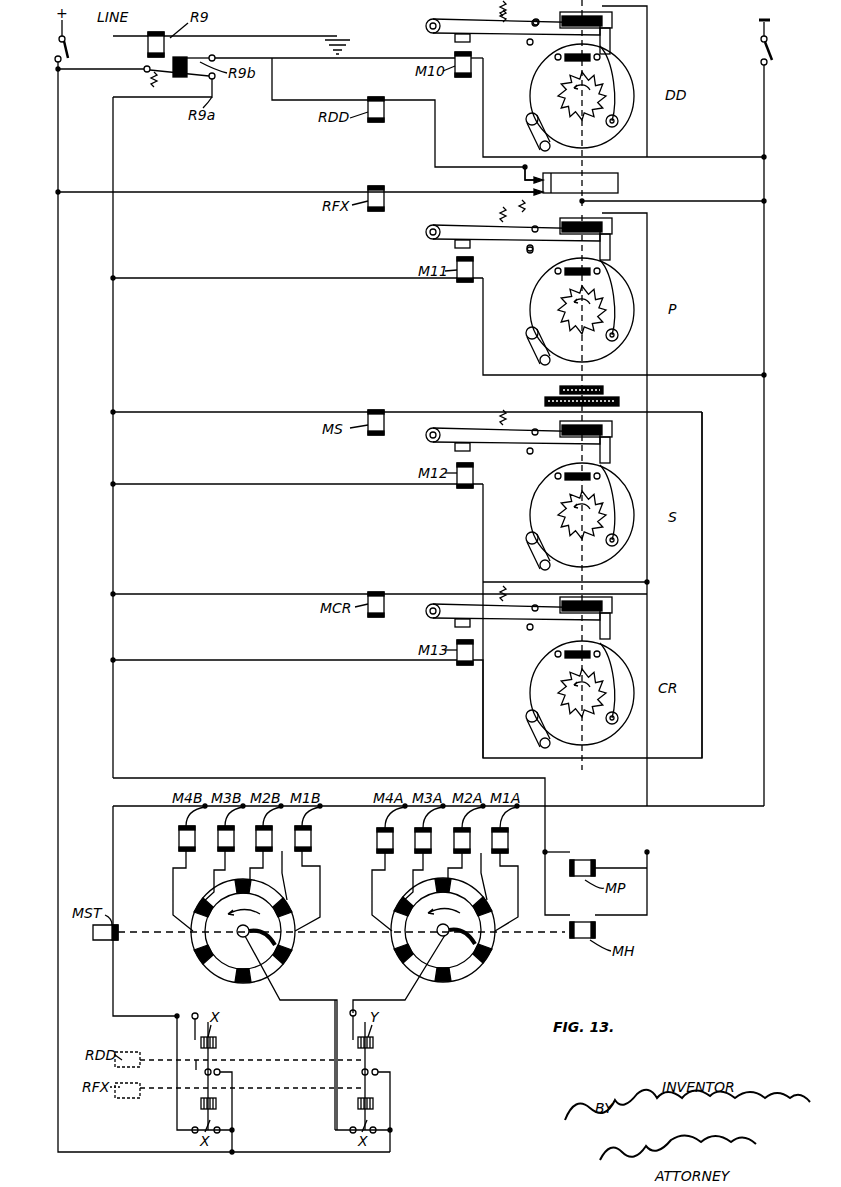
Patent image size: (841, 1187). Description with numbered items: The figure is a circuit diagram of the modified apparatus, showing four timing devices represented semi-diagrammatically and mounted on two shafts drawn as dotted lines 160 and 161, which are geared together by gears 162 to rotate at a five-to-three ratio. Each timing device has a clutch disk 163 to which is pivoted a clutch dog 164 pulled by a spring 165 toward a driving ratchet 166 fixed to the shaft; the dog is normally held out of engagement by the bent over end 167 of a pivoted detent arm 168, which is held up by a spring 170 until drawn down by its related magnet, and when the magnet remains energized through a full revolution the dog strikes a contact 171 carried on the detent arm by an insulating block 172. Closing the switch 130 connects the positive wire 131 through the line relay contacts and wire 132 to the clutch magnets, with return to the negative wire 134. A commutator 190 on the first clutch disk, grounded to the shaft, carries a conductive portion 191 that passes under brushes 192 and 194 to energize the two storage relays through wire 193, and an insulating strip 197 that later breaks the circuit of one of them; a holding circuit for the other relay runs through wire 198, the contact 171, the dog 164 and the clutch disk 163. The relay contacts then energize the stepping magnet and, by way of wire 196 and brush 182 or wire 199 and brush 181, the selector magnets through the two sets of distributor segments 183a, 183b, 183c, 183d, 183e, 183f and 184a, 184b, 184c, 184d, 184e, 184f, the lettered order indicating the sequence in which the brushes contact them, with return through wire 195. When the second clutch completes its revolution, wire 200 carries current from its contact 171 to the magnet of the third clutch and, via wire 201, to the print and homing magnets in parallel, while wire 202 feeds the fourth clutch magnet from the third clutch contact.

The switch 130 is at (67, 46).
The positive wire 131 is at (58, 160).
The wire 132 is at (113, 160).
The negative wire 134 is at (766, 147).
The shaft 160 is at (582, 378).
The shaft 161 is at (582, 578).
The gears 162 is at (545, 401).
The clutch disk 163 is at (618, 146).
The clutch dog 164 is at (632, 77).
The spring 165 is at (566, 266).
The driving ratchet 166 is at (558, 92).
The bent over end 167 is at (611, 45).
The detent arm 168 is at (502, 33).
The spring 170 is at (500, 233).
The contact 171 is at (612, 22).
The insulating block 172 is at (556, 18).
The brush 181 is at (470, 964).
The brush 182 is at (272, 962).
The commutator segment 183a is at (493, 947).
The commutator segment 183b is at (474, 900).
The commutator segment 183c is at (405, 900).
The commutator segment 183d is at (398, 955).
The commutator segment 183e is at (432, 985).
The commutator segment 183f is at (462, 975).
The commutator segment 184a is at (288, 947).
The commutator segment 184b is at (279, 900).
The commutator segment 184c is at (205, 900).
The commutator segment 184d is at (196, 950).
The commutator segment 184e is at (212, 968).
The commutator segment 184f is at (258, 982).
The commutator 190 is at (628, 180).
The conductive portion 191 is at (615, 187).
The brush 192 is at (530, 180).
The wire 193 is at (720, 203).
The brush 194 is at (532, 192).
The wire 195 is at (113, 868).
The wire 196 is at (318, 995).
The insulating strip 197 is at (540, 193).
The wire 198 is at (647, 118).
The wire 199 is at (400, 1005).
The wire 200 is at (650, 393).
The wire 201 is at (385, 777).
The wire 202 is at (702, 668).